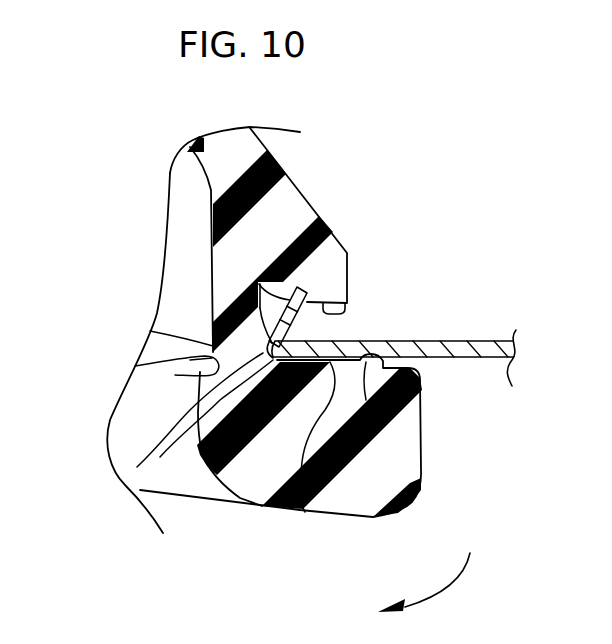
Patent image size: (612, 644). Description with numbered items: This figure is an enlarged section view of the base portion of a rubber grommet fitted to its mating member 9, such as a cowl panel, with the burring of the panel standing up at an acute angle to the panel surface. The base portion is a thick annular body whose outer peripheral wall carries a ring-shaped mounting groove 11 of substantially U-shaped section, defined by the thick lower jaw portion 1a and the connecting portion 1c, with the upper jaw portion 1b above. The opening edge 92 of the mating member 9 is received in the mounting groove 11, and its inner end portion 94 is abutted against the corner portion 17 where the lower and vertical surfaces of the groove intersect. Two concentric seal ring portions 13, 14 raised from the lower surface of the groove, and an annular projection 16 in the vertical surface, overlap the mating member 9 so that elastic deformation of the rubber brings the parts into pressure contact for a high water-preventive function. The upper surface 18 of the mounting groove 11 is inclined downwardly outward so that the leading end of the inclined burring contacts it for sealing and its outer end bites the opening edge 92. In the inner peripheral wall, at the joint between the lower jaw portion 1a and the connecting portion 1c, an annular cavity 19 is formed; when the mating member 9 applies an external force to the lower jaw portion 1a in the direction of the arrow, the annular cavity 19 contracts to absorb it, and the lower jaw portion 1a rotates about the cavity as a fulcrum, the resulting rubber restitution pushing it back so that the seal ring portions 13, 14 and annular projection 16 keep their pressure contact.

The lower jaw portion 1a is at (415, 468).
The upper jaw portion 1b is at (338, 253).
The connecting portion 1c is at (233, 268).
The opening edge 92 is at (268, 280).
The upper surface 18 is at (346, 304).
The mounting groove 11 is at (322, 325).
The mating member 9 is at (478, 342).
The annular projection 16 is at (212, 346).
The annular cavity 19 is at (178, 362).
The corner portion 17 is at (137, 467).
The inner end portion 94 is at (160, 457).
The seal ring portion 13 is at (300, 511).
The seal ring portion 14 is at (393, 421).